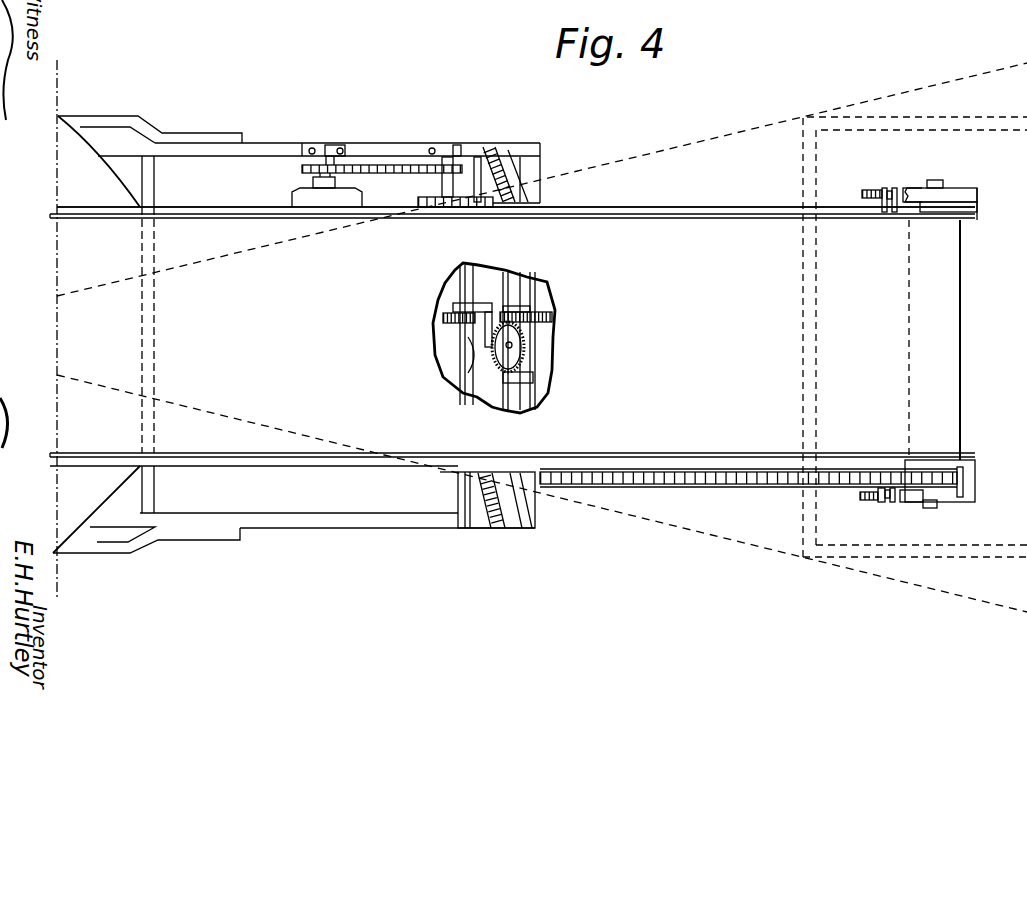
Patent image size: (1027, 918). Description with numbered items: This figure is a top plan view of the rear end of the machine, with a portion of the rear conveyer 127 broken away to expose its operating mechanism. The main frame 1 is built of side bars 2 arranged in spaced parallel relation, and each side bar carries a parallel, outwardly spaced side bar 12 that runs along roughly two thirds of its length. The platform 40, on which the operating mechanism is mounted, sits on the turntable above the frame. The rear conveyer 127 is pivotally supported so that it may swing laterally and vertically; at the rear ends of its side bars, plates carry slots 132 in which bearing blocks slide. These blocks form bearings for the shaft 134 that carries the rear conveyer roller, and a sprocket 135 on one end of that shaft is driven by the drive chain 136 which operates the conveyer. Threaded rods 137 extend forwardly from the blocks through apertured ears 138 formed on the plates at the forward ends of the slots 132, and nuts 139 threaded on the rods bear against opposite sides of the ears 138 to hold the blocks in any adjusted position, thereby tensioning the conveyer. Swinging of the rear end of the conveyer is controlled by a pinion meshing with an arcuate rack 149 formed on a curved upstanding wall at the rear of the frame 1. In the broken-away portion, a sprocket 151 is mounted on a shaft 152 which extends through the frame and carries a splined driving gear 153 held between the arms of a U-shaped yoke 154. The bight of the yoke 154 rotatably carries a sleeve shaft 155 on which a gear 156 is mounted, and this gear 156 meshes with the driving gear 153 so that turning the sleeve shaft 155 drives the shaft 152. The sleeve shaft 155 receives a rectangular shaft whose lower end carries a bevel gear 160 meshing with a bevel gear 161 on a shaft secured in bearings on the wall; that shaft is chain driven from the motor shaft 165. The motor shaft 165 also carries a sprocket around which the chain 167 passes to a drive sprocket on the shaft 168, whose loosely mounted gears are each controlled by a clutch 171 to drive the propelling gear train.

The main frame 1 is at (417, 529).
The side bars 2 is at (253, 144).
The side bars 12 is at (116, 120).
The platform 40 is at (112, 489).
The rear conveyer 127 is at (732, 209).
The slots 132 is at (915, 190).
The shaft 134 is at (943, 184).
The sprocket 135 is at (947, 470).
The drive chain 136 is at (765, 488).
The threaded rods 137 is at (868, 183).
The apertured ears 138 is at (888, 188).
The nuts 139 is at (898, 213).
The arcuate rack 149 is at (542, 337).
The sprocket 151 is at (522, 527).
The shaft 152 is at (533, 398).
The driving gear 153 is at (555, 318).
The U-shaped yoke 154 is at (533, 378).
The sleeve shaft 155 is at (482, 350).
The gear 156 is at (512, 341).
The bevel gear 160 is at (470, 377).
The bevel gear 161 is at (447, 320).
The motor shaft 165 is at (440, 186).
The chain 167 is at (398, 165).
The shaft 168 is at (298, 148).
The clutch 171 is at (338, 189).